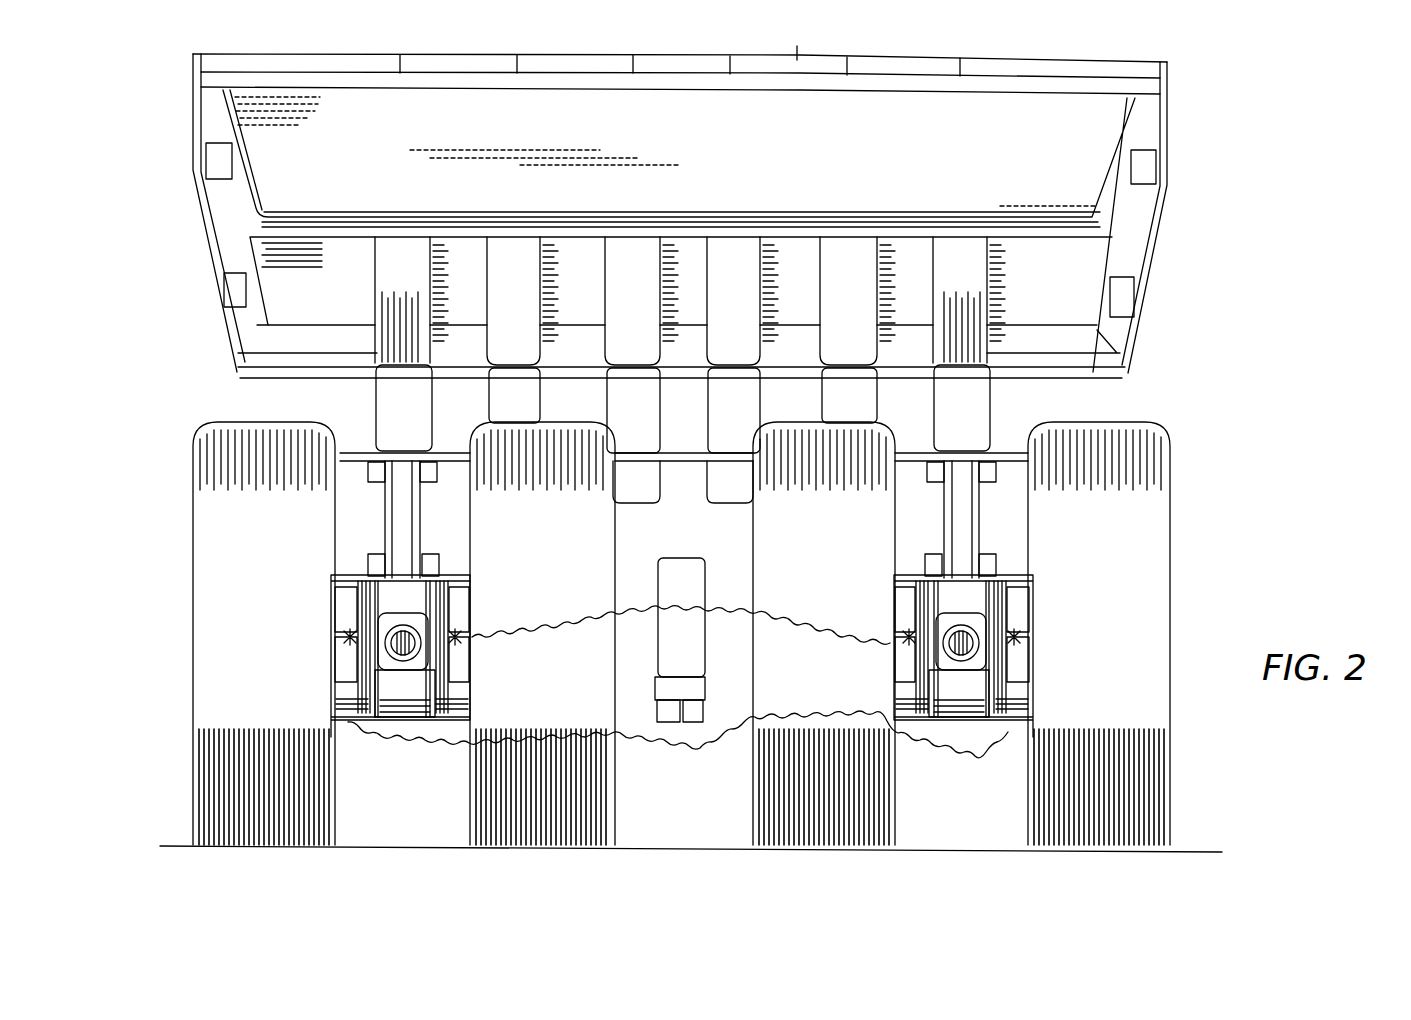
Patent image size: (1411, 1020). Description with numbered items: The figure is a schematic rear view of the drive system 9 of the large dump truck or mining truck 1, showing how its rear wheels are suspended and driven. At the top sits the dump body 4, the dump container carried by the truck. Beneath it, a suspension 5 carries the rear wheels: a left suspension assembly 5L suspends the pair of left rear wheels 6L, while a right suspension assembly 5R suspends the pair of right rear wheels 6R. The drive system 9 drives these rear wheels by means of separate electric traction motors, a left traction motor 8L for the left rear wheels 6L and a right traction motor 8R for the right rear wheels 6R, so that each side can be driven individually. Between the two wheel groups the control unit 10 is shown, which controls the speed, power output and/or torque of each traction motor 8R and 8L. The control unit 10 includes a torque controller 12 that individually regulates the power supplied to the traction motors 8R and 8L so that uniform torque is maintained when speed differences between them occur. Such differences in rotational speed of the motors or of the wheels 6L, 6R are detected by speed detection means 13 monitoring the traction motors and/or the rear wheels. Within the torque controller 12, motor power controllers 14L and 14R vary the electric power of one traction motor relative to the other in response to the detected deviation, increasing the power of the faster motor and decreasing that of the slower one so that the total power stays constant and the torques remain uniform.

The dump truck 1 is at (1271, 219).
The dump body 4 is at (1170, 133).
The suspension 5 is at (363, 495).
The left suspension assembly 5L is at (397, 527).
The right suspension assembly 5R is at (937, 543).
The left rear wheels 6L is at (233, 600).
The right rear wheels 6R is at (1143, 620).
The left traction motor 8L is at (348, 662).
The right traction motor 8R is at (1013, 683).
The drive system 9 is at (470, 673).
The control unit 10 is at (682, 559).
The torque controller 12 is at (695, 687).
The speed detection means 13 is at (464, 639).
The left motor power controller 14L is at (655, 706).
The right motor power controller 14R is at (706, 709).